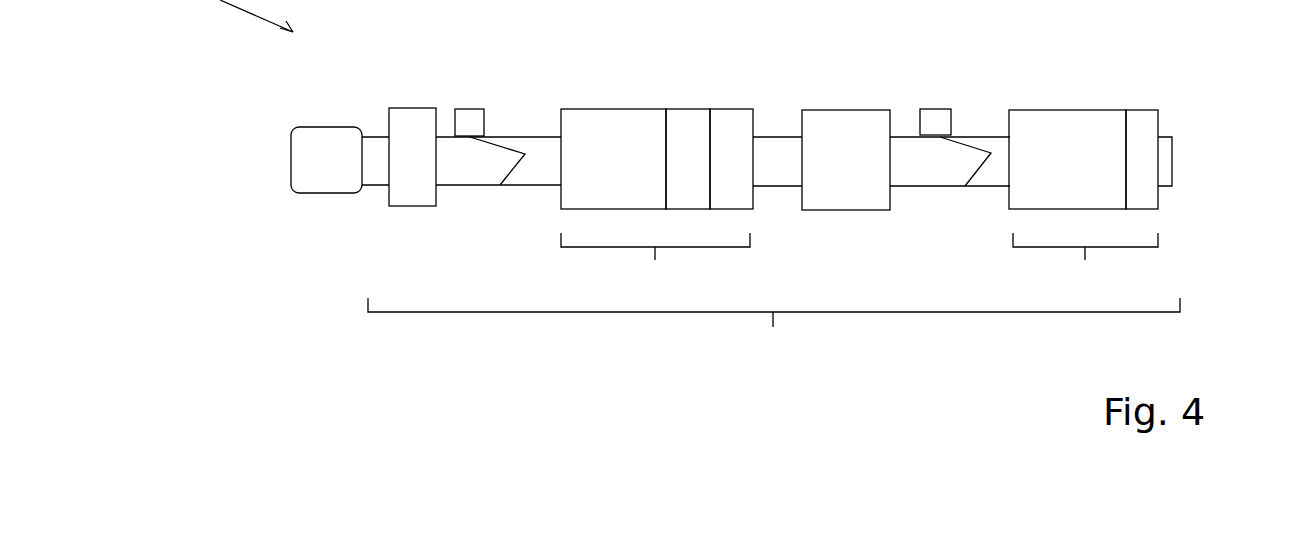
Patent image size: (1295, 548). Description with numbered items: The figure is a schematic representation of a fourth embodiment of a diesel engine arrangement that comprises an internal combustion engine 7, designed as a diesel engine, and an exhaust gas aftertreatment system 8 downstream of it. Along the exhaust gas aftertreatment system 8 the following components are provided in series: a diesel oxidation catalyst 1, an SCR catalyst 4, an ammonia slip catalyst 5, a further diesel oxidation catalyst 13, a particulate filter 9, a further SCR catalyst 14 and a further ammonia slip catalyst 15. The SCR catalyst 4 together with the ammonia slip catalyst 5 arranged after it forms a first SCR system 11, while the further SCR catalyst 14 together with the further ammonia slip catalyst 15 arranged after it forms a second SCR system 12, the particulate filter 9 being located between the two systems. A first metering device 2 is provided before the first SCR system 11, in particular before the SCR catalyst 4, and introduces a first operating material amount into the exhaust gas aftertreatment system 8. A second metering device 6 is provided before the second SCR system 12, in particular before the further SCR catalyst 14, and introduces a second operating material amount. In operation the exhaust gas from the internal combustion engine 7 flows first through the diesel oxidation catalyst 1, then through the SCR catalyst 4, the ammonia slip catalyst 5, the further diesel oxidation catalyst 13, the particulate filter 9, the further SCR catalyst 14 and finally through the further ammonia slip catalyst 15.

The diesel oxidation catalyst 1 is at (413, 128).
The first metering device 2 is at (470, 122).
The SCR catalyst 4 is at (593, 127).
The ammonia slip catalyst 5 is at (680, 127).
The second metering device 6 is at (935, 122).
The internal combustion engine 7 is at (323, 140).
The exhaust gas aftertreatment system 8 is at (774, 337).
The particulate filter 9 is at (840, 130).
The first SCR system 11 is at (655, 273).
The second SCR system 12 is at (1085, 273).
The further diesel oxidation catalyst 13 is at (738, 127).
The further SCR catalyst 14 is at (1032, 128).
The further ammonia slip catalyst 15 is at (1143, 127).